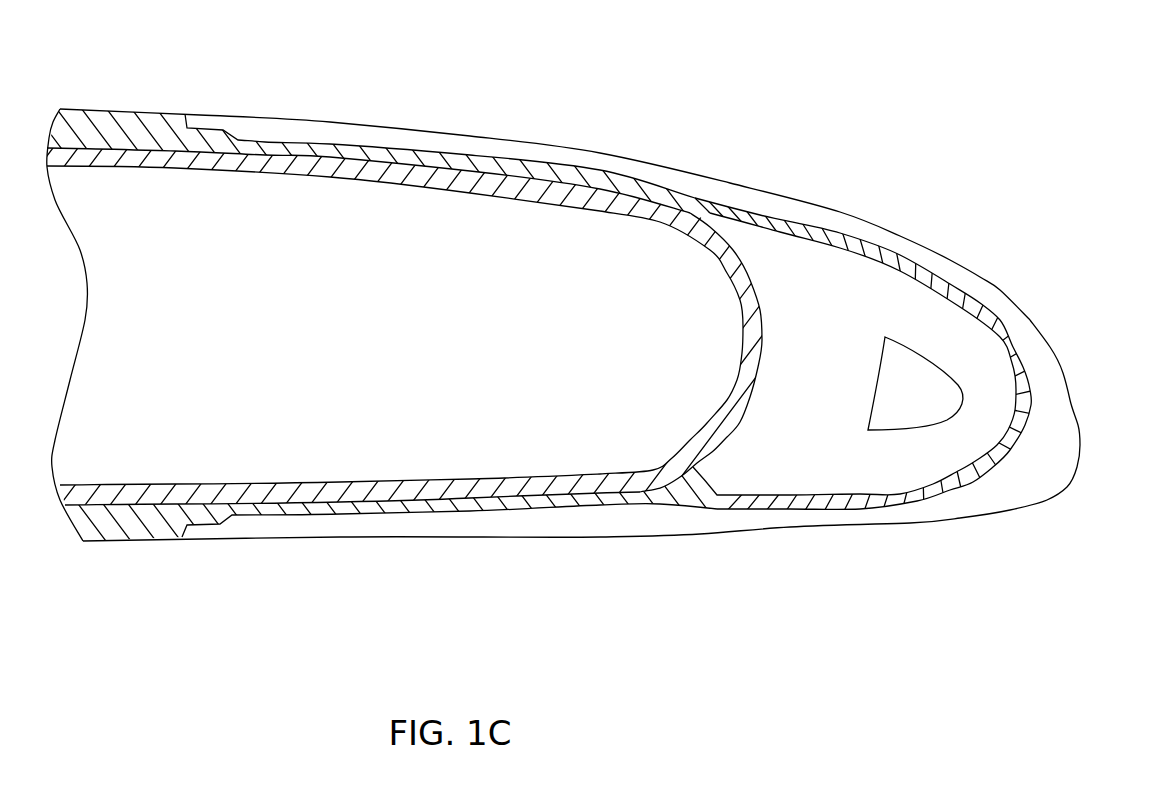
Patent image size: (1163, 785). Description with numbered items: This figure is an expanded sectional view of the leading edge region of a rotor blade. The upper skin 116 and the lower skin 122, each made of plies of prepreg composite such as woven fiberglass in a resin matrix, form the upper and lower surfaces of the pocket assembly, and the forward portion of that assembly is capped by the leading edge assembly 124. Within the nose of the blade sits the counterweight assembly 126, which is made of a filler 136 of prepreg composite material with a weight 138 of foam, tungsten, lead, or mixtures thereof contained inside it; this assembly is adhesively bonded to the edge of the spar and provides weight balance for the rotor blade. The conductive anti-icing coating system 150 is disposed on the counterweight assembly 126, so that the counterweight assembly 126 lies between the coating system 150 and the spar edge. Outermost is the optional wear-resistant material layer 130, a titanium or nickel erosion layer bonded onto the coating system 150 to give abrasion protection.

The upper skin 116 is at (128, 108).
The lower skin 122 is at (142, 538).
The leading edge assembly 124 is at (785, 150).
The counterweight assembly 126 is at (830, 303).
The wear-resistant material layer 130 is at (1030, 320).
The filler 136 is at (830, 389).
The weight 138 is at (932, 403).
The conductive anti-icing coating system 150 is at (815, 509).